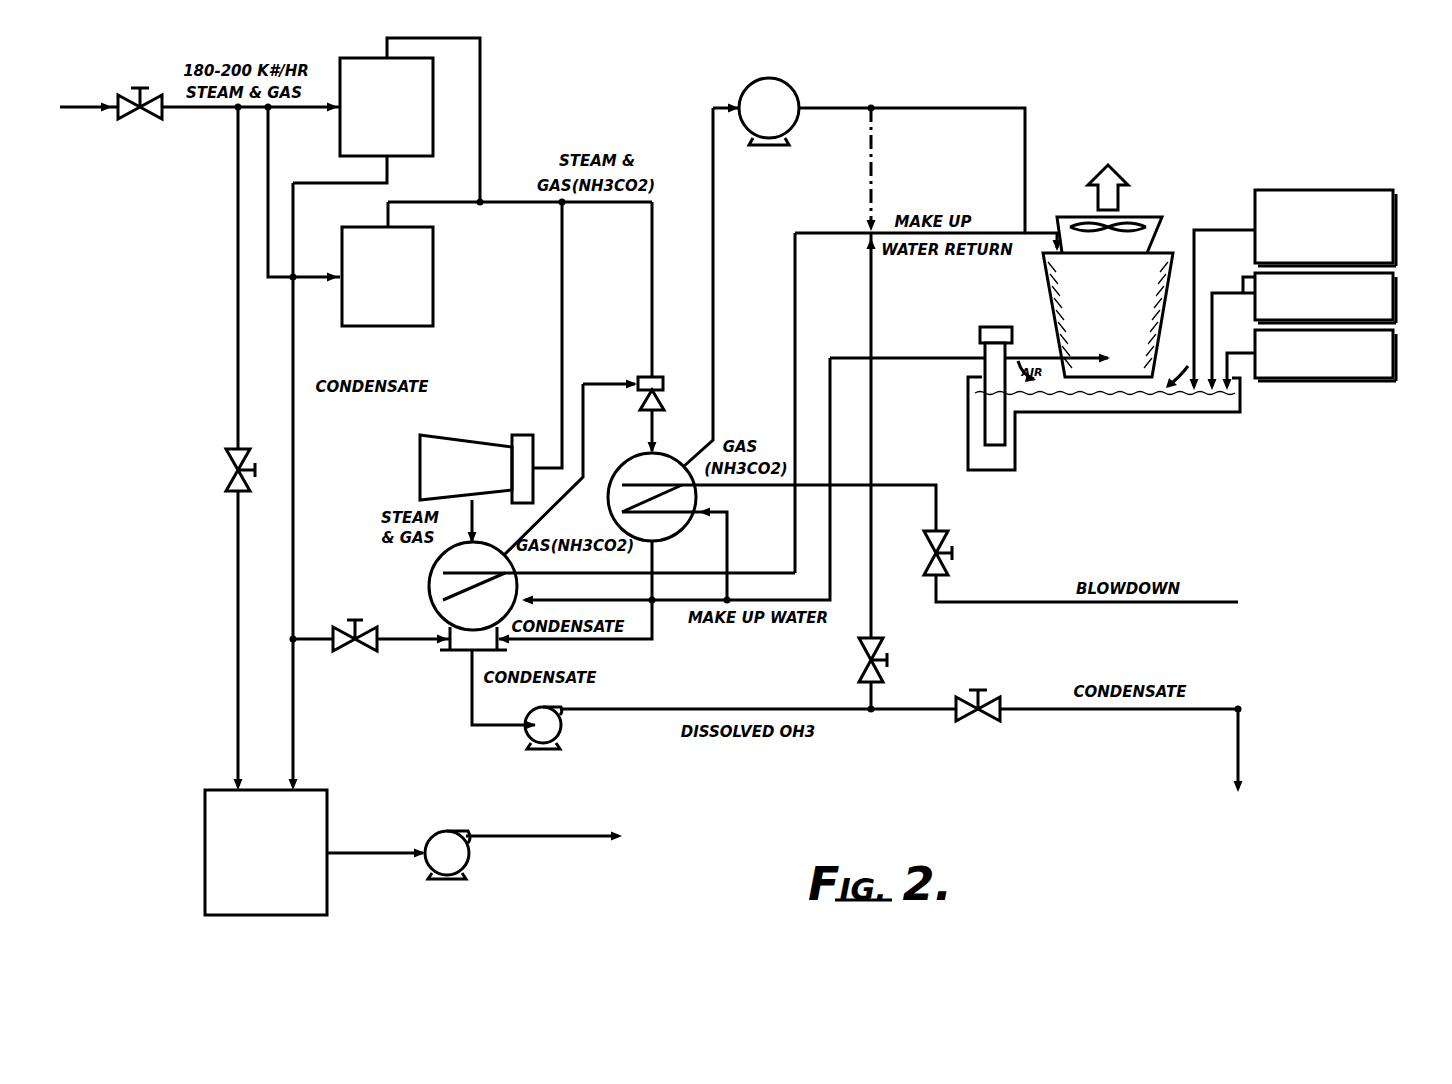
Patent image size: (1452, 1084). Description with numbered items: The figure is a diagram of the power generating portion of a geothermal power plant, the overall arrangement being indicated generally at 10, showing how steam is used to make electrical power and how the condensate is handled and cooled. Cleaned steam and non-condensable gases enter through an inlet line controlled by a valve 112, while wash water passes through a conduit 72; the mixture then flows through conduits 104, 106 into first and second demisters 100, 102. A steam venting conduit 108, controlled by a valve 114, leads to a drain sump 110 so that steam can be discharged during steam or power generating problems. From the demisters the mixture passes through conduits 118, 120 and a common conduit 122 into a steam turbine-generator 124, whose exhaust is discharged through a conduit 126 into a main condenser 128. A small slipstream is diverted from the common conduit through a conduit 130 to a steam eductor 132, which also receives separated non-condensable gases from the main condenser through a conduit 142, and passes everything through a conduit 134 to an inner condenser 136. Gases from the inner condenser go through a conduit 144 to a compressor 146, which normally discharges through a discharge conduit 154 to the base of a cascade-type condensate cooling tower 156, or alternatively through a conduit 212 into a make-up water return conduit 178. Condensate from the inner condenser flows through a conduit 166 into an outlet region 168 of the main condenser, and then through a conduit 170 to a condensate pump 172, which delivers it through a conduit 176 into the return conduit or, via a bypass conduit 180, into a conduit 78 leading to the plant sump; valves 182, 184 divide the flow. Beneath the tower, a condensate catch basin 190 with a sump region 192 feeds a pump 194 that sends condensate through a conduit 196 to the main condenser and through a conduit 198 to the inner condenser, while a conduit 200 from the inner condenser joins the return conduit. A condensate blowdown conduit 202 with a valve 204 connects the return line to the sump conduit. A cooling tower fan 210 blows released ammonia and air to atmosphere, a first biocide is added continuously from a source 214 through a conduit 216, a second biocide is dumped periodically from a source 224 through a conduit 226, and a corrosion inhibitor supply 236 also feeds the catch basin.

The cooling water system 10 is at (1214, 499).
The conduit 72 is at (78, 113).
The conduit 78 is at (1243, 760).
The first demister 100 is at (413, 158).
The second demister 102 is at (435, 258).
The conduit 104 is at (289, 112).
The conduit 106 is at (271, 168).
The steam venting conduit 108 is at (236, 332).
The drain sump 110 is at (328, 806).
The valve 112 is at (150, 117).
The valve 114 is at (224, 470).
The conduit 118 is at (480, 88).
The conduit 120 is at (457, 204).
The common conduit 122 is at (527, 204).
The steam turbine-generator 124 is at (420, 443).
The conduit 126 is at (478, 524).
The main condenser 128 is at (429, 569).
The conduit 130 is at (651, 257).
The steam eductor 132 is at (662, 377).
The conduit 134 is at (656, 442).
The second condenser 136 is at (672, 536).
The conduit 142 is at (583, 438).
The conduit 144 is at (713, 214).
The compressor 146 is at (794, 90).
The discharge conduit 154 is at (1025, 130).
The cascade-type condensate cooling tower 156 is at (1177, 231).
The conduit 166 is at (653, 590).
The outlet region 168 is at (457, 652).
The conduit 170 is at (471, 714).
The condensate pump 172 is at (558, 738).
The conduit 176 is at (875, 427).
The make-up water return conduit 178 is at (797, 316).
The bypass conduit 180 is at (1046, 712).
The valve 182 is at (888, 662).
The valve 184 is at (981, 689).
The condensate catch basin 190 is at (1195, 414).
The sump region 192 is at (1016, 462).
The pump 194 is at (993, 326).
The conduit 196 is at (880, 354).
The conduit 198 is at (729, 548).
The conduit 200 is at (740, 489).
The condensate blowdown conduit 202 is at (942, 519).
The valve 204 is at (955, 556).
The cooling tower fan 210 is at (1147, 218).
The conduit 212 is at (874, 168).
The source 214 is at (1243, 280).
The conduit 216 is at (1237, 296).
The source 224 is at (1312, 381).
The conduit 226 is at (1247, 352).
The corrosion inhibiter supply 236 is at (1335, 190).